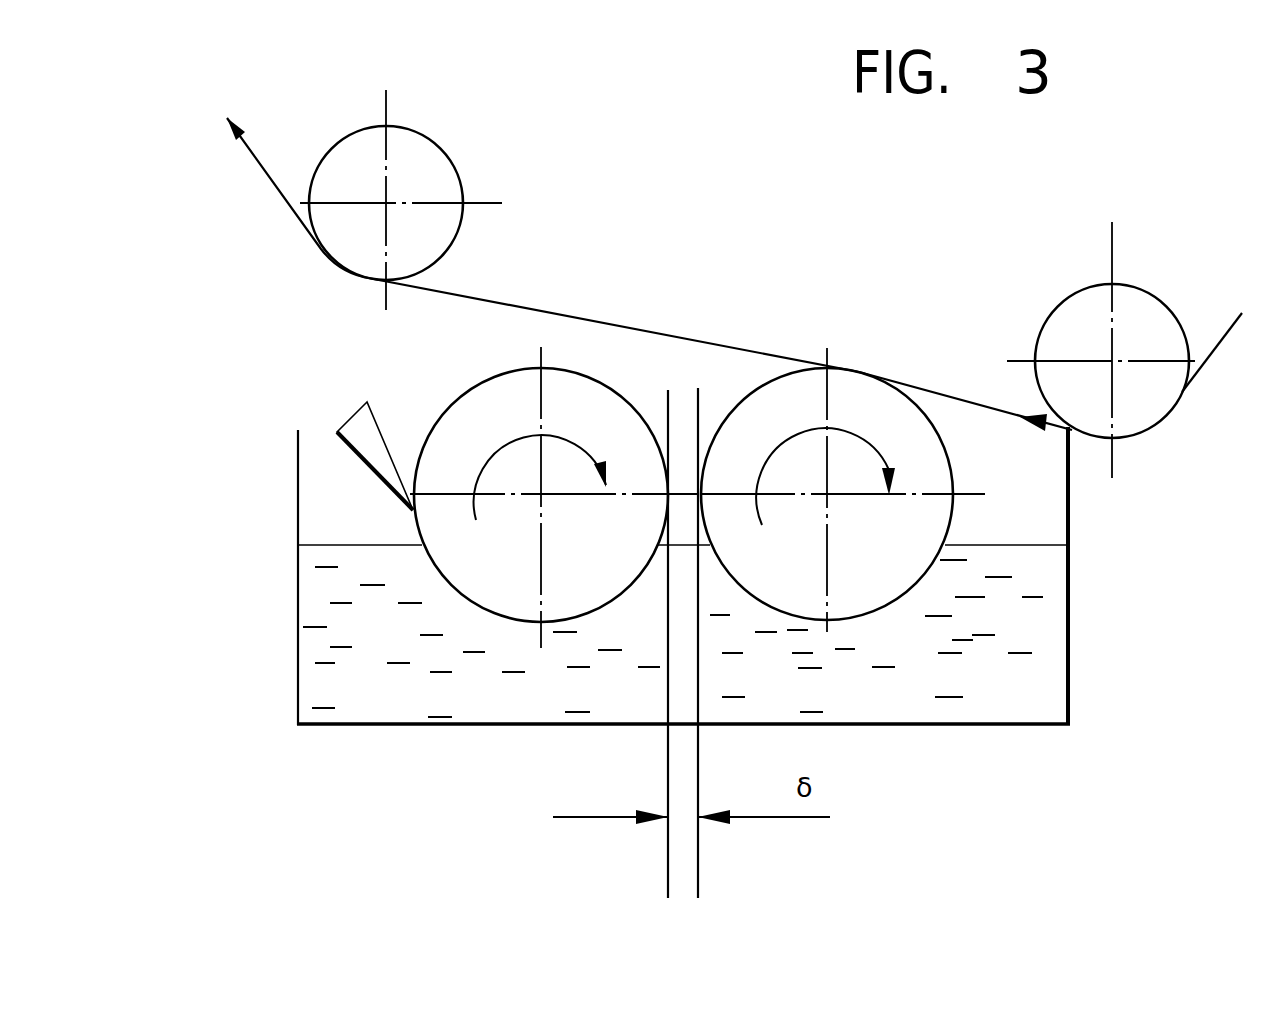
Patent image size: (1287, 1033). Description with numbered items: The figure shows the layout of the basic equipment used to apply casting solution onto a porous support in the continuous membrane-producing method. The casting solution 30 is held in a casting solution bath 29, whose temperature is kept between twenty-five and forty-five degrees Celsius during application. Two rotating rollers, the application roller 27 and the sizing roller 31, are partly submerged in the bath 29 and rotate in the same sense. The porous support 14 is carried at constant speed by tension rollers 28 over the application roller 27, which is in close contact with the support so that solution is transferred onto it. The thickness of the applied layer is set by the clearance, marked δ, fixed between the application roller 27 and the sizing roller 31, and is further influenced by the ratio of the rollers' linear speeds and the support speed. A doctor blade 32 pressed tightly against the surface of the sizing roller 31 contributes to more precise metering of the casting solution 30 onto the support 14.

The porous support 14 is at (927, 388).
The application roller 27 is at (858, 397).
The tension rollers 28 is at (440, 170).
The casting solution bath 29 is at (1070, 627).
The casting solution 30 is at (313, 595).
The sizing roller 31 is at (480, 400).
The doctor blade 32 is at (357, 425).